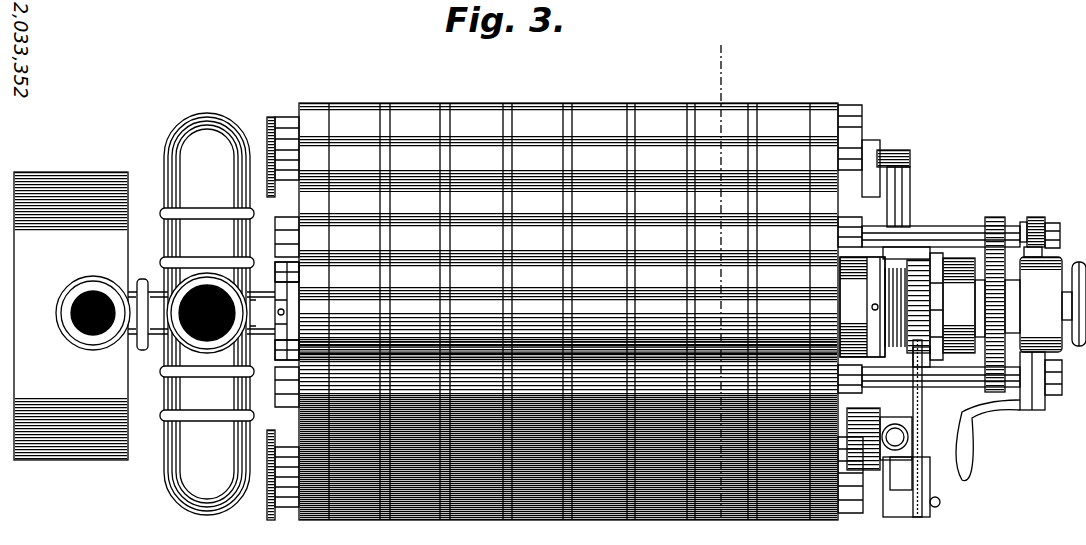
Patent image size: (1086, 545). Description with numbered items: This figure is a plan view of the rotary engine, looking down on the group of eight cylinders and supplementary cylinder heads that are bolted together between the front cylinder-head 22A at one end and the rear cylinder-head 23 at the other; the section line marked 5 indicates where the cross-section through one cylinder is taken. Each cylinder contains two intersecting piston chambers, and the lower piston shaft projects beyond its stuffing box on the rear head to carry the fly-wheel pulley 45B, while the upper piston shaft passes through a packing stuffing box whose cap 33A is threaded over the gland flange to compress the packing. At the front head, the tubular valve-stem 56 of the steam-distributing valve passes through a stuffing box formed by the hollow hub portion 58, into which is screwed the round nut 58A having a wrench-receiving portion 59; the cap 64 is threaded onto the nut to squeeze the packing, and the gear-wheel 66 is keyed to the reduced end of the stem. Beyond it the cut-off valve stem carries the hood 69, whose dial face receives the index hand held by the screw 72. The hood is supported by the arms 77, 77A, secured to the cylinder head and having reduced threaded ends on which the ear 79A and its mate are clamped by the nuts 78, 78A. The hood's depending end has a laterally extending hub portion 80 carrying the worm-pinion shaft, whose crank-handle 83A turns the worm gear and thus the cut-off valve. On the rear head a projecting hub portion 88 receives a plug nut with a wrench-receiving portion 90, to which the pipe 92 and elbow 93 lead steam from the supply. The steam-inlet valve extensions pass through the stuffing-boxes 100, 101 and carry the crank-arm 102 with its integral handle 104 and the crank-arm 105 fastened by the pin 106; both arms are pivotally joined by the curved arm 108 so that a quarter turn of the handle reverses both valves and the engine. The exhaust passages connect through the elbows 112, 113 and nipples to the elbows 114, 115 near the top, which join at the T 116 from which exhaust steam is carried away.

The piston chamber 5 is at (720, 273).
The front cylinder-head 22A is at (825, 103).
The rear cylinder-head 23 is at (313, 125).
The cap 33A is at (967, 262).
The fly-wheel pulley 45B is at (76, 172).
The tubular valve-stem 56 is at (964, 305).
The hollow hub portion 58 is at (862, 307).
The round nut 58A is at (862, 307).
The wrench-receiving portion 59 is at (918, 247).
The cap 64 is at (914, 306).
The gear-wheel 66 is at (995, 217).
The hood 69 is at (1041, 304).
The screw 72 is at (1074, 313).
The arm 77 is at (955, 387).
The arm 77A is at (888, 235).
The nut 78 is at (1052, 392).
The nut 78A is at (1052, 232).
The ear 79A is at (1036, 217).
The hub portion 80 is at (1032, 381).
The crank-handle 83A is at (998, 413).
The projecting hub portion 88 is at (299, 312).
The wrench-receiving portion 90 is at (278, 292).
The pipe 92 is at (273, 351).
The elbow 93 is at (122, 346).
The stuffing-box 100 is at (872, 480).
The stuffing-box 101 is at (870, 145).
The crank-arm 102 is at (898, 478).
The handle 104 is at (897, 425).
The crank-arm 105 is at (897, 185).
The pin 106 is at (941, 504).
The arm 108 is at (922, 437).
The elbow 112 is at (209, 514).
The elbow 113 is at (196, 116).
The elbow 114 is at (218, 314).
The elbow 115 is at (191, 314).
The T 116 is at (167, 272).